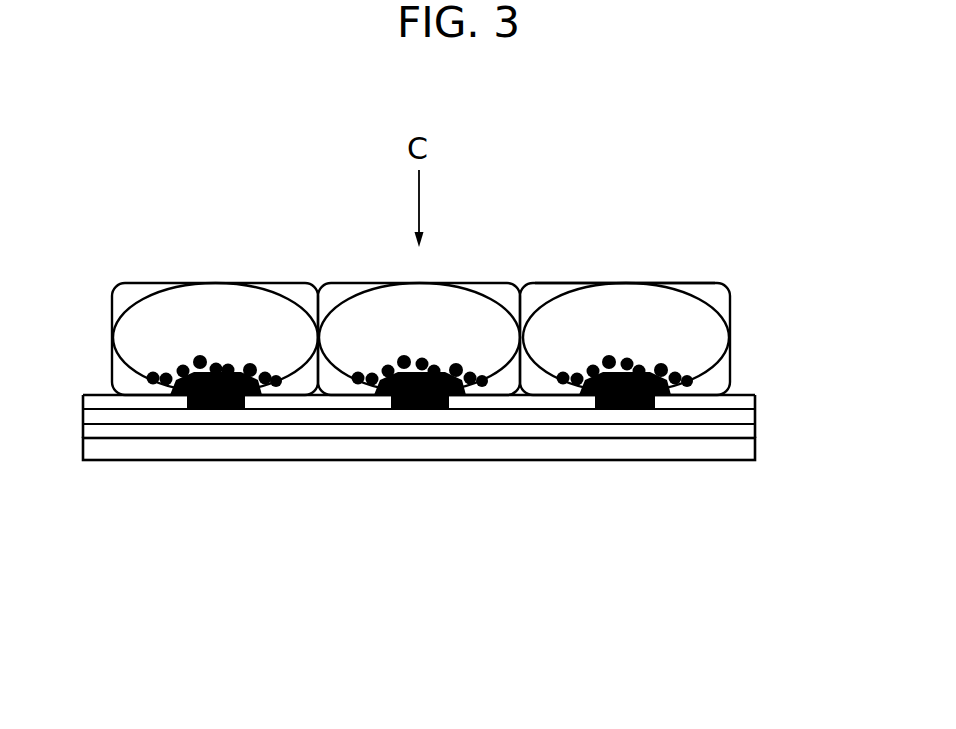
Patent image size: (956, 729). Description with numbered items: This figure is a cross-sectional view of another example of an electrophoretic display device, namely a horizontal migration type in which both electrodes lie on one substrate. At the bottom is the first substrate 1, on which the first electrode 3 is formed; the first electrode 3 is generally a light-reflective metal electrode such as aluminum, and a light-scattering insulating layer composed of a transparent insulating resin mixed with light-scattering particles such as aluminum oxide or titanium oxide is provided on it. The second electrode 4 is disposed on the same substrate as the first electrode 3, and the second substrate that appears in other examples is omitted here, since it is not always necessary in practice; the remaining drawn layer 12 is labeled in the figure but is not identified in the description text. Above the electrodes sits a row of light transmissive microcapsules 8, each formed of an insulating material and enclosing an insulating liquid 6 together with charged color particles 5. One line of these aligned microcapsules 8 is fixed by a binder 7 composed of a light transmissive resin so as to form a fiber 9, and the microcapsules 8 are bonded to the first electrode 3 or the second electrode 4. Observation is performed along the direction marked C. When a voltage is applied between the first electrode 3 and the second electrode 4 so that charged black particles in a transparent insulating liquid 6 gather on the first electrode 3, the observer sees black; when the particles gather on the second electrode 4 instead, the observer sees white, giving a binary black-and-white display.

The first substrate 1 is at (753, 450).
The first electrode 3 is at (753, 432).
The second electrode 4 is at (621, 410).
The charged color particles 5 is at (688, 374).
The insulating liquid 6 is at (703, 337).
The binder 7 is at (715, 292).
The light transmissive microcapsule 8 is at (706, 309).
The fiber 9 is at (553, 283).
The wiring layer 12 is at (753, 417).